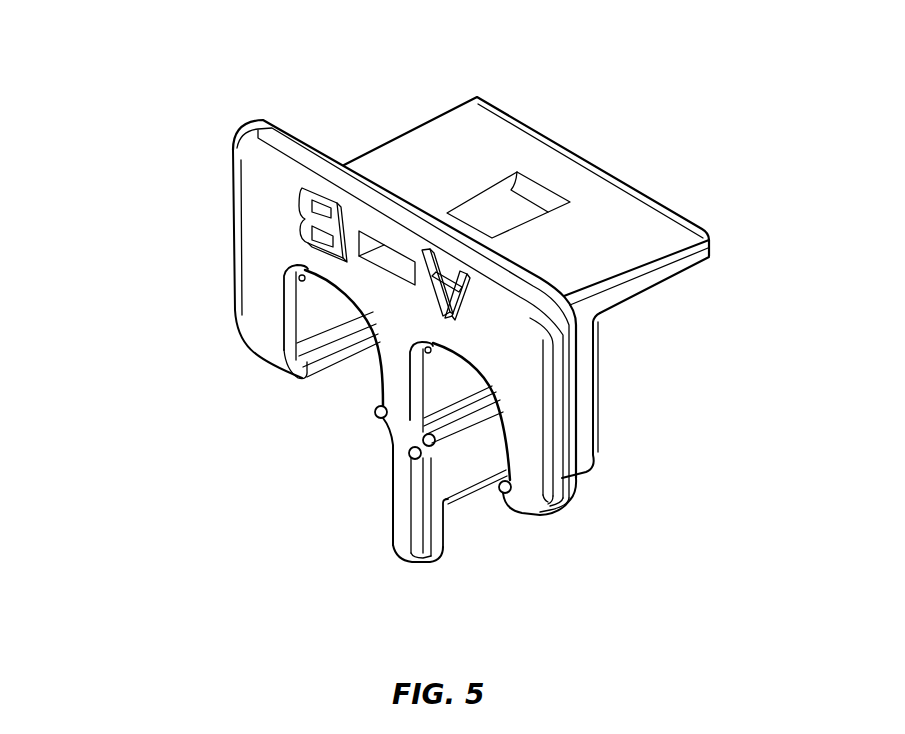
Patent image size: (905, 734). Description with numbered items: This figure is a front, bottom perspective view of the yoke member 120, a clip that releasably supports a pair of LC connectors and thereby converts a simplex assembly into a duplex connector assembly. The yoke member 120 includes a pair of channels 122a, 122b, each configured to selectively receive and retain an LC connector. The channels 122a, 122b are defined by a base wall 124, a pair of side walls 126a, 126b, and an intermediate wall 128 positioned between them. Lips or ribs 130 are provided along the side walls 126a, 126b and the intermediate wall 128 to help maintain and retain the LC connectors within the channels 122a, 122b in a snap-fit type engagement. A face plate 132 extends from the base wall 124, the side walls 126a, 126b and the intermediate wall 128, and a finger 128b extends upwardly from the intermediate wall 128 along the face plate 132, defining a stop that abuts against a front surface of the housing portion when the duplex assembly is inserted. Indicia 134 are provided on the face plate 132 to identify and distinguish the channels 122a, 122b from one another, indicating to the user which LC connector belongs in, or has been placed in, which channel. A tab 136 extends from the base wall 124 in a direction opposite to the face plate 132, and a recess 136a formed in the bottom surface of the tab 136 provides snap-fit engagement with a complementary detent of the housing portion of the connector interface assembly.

The yoke member 120 is at (280, 82).
The channel 122a is at (472, 468).
The channel 122b is at (335, 398).
The base wall 124 is at (580, 318).
The side wall 126a is at (587, 413).
The side wall 126b is at (305, 302).
The intermediate wall 128 is at (403, 490).
The finger 128b is at (437, 560).
The lips or ribs 130 is at (303, 377).
The face plate 132 is at (245, 165).
The indicia 134 is at (472, 308).
The tab 136 is at (660, 286).
The recess 136a is at (500, 211).